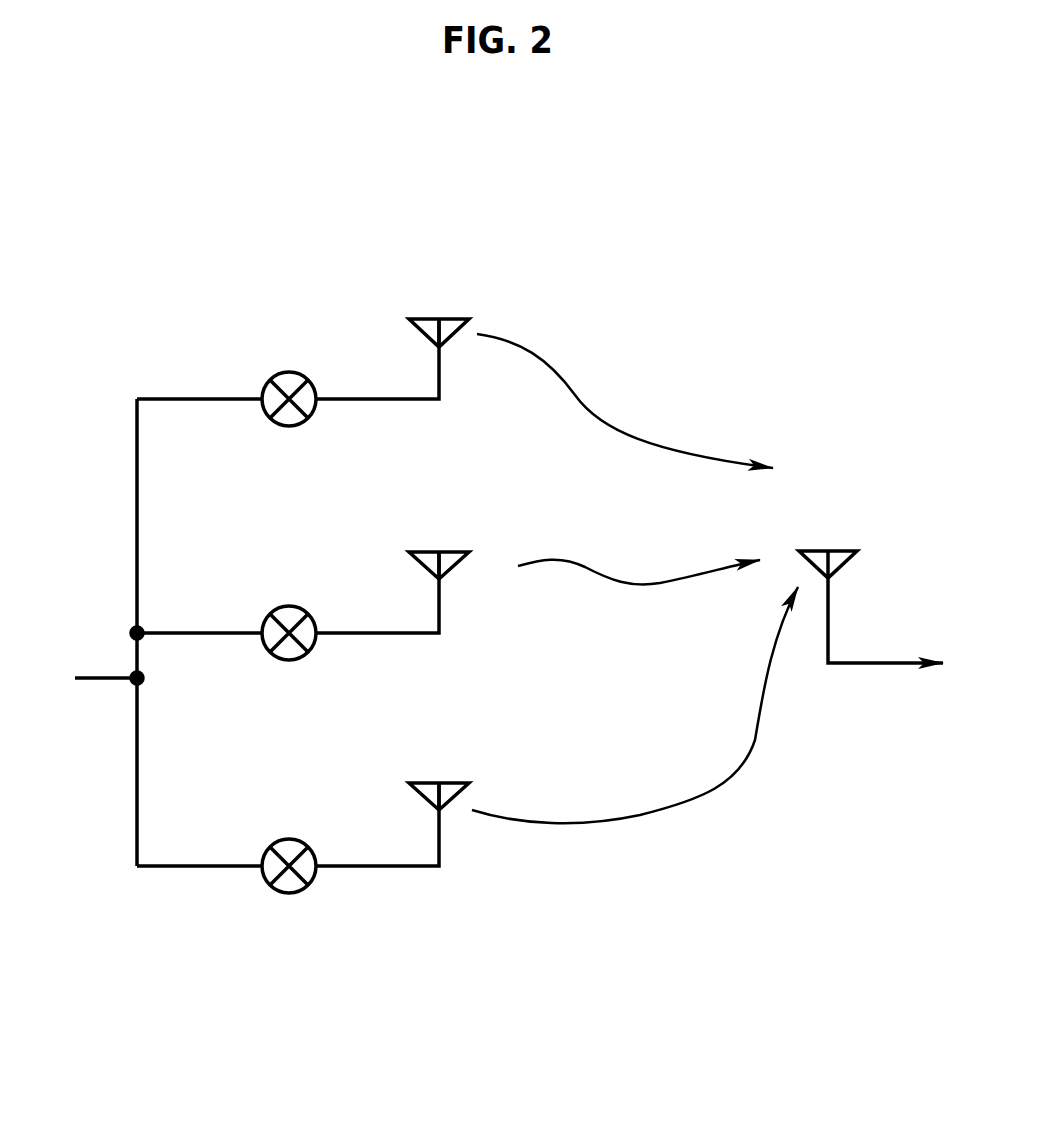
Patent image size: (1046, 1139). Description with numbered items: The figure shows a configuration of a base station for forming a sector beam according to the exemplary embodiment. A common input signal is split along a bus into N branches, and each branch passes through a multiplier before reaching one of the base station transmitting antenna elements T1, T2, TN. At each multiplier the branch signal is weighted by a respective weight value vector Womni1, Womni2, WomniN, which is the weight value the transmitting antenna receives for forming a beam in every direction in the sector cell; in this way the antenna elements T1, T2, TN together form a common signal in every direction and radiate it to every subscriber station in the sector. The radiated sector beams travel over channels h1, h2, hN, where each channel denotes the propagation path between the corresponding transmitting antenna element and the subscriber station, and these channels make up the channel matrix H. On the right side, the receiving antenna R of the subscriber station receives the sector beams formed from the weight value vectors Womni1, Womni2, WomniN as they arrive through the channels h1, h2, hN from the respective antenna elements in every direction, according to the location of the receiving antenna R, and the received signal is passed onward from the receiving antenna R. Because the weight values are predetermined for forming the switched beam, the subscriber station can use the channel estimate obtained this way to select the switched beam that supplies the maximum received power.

The first base station transmitting antenna element T1 is at (439, 309).
The second base station transmitting antenna element T2 is at (439, 542).
The N-th base station transmitting antenna element TN is at (439, 772).
The receiving antenna R is at (868, 565).
The channel h1 is at (625, 401).
The channel h2 is at (639, 558).
The channel hN is at (635, 705).
The weight value vector Womni1 is at (289, 428).
The weight value vector Womni2 is at (289, 662).
The weight value vector WomniN is at (289, 895).